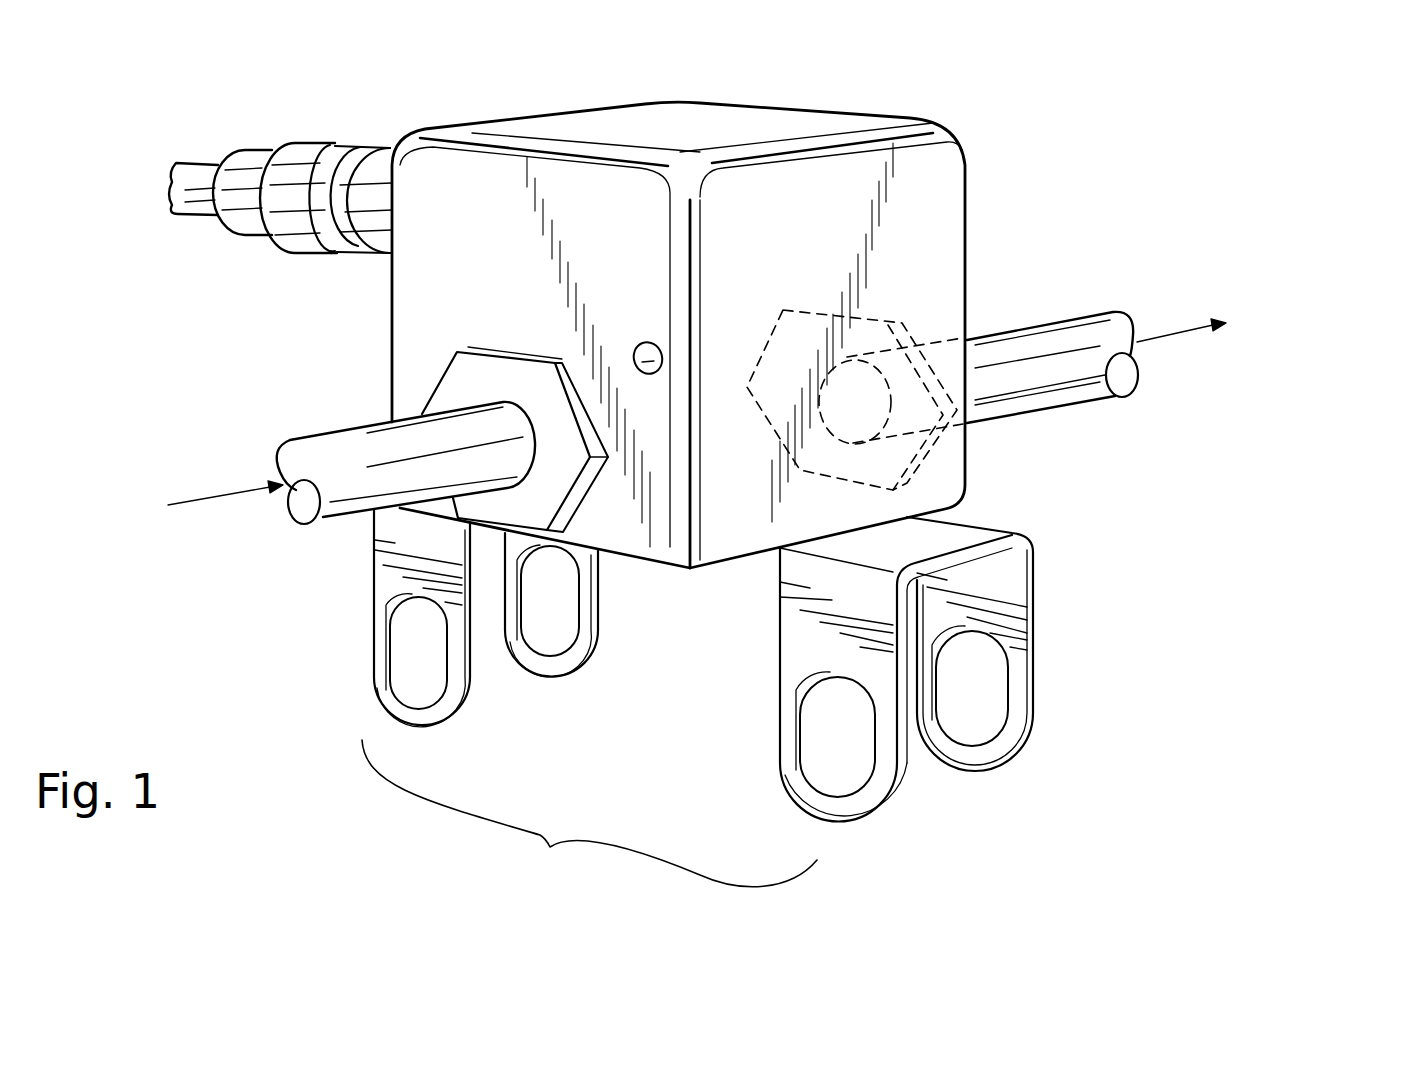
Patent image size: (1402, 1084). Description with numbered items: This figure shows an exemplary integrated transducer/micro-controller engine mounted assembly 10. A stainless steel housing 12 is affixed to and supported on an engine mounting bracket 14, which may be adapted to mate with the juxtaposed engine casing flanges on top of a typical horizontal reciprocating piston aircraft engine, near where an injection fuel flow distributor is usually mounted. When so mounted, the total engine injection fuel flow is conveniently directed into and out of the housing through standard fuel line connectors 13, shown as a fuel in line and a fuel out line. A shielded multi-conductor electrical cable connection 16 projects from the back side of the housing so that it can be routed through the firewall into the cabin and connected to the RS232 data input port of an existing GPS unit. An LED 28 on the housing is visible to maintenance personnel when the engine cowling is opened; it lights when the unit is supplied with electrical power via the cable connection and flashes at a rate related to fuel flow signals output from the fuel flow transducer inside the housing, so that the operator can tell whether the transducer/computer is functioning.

The integrated transducer/micro-controller engine mounted assembly 10 is at (985, 470).
The stainless steel housing 12 is at (967, 488).
The fuel line connectors 13 is at (470, 383).
The engine mounting bracket 14 is at (1036, 677).
The shielded multi-conductor electrical cable connection 16 is at (300, 153).
The LED 28 is at (636, 347).